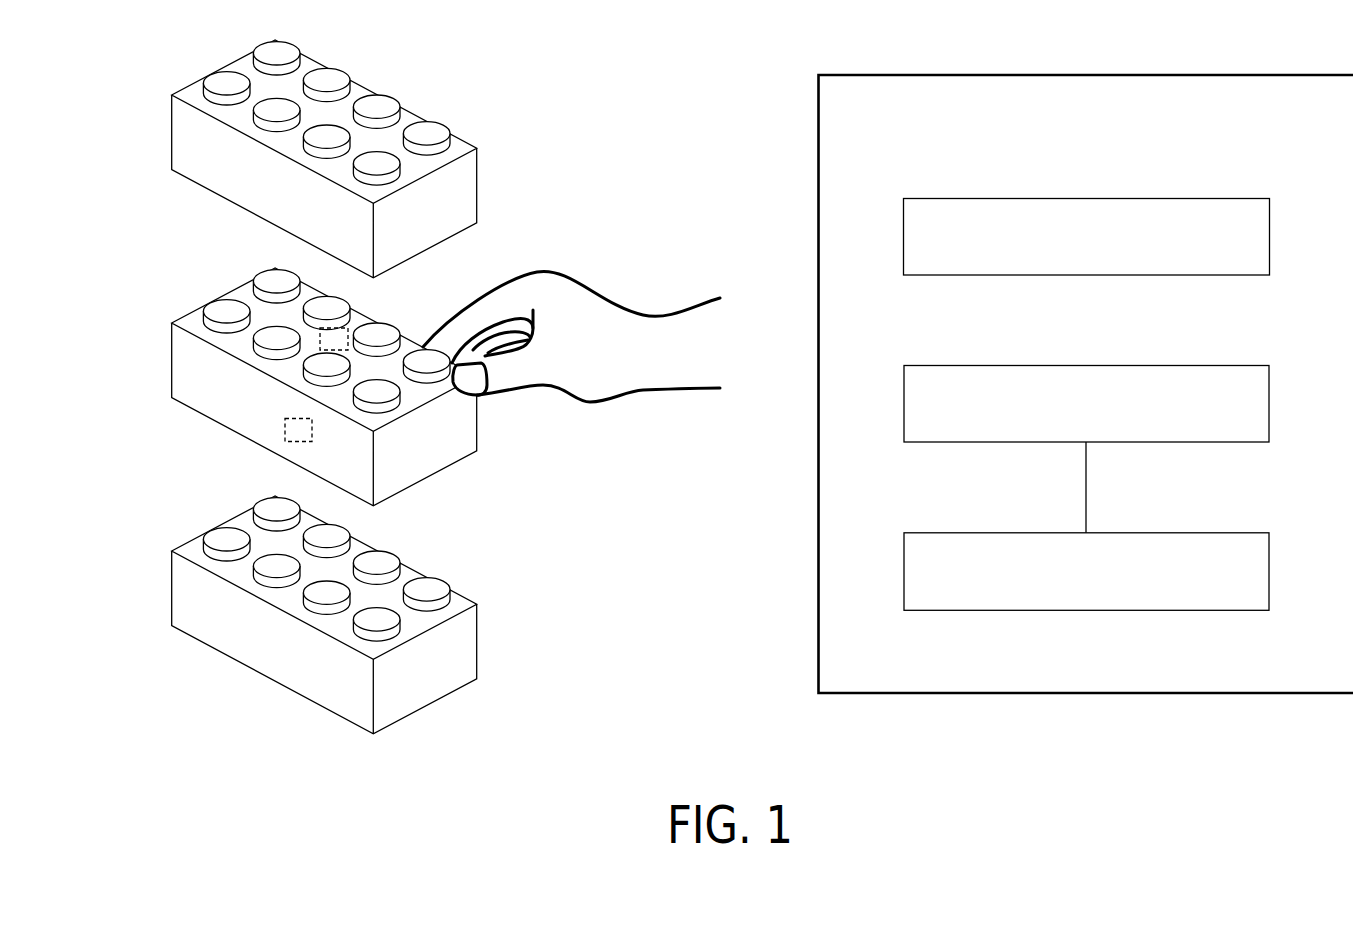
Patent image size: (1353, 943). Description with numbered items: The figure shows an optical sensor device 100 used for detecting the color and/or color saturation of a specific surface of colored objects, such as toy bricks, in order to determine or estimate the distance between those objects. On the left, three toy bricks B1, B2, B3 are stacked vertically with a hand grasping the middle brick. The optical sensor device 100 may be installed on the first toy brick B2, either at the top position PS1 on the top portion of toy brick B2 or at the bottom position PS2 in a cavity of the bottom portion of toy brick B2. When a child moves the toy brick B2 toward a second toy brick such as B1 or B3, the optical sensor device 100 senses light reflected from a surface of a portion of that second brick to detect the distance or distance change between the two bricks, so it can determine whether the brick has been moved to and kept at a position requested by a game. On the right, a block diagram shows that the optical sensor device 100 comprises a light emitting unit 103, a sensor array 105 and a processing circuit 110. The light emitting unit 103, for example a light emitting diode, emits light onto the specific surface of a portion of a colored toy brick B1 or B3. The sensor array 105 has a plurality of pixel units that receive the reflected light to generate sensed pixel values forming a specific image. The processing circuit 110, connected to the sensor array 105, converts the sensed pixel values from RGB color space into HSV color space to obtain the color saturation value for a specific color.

The toy brick B1 is at (187, 142).
The toy brick B2 is at (187, 370).
The toy brick B3 is at (187, 598).
The top position PS1 is at (320, 337).
The bottom position PS2 is at (285, 433).
The optical sensor device 100 is at (1252, 74).
The light emitting unit 103 is at (1234, 197).
The sensor array 105 is at (1234, 365).
The processing circuit 110 is at (1234, 532).